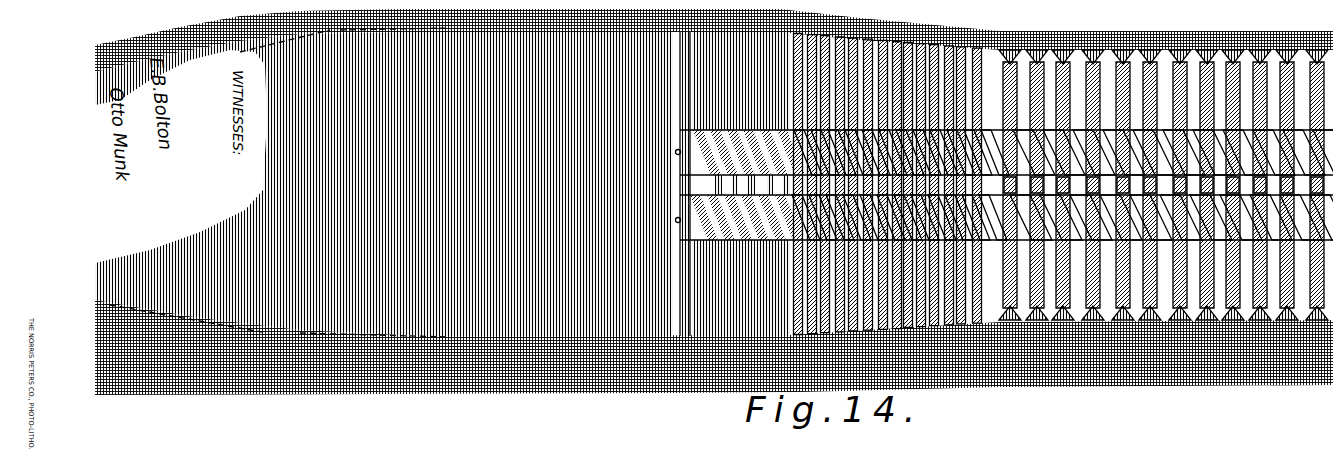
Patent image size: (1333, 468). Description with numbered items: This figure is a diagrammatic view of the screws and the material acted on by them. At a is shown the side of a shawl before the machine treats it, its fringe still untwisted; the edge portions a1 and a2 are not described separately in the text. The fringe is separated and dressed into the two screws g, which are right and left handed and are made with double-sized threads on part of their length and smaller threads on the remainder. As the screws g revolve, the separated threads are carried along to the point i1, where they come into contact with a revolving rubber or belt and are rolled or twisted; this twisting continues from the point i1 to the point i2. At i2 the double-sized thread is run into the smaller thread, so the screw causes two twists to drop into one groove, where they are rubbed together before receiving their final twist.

The side of a shawl a is at (714, 202).
The selvage edge portion a1 is at (258, 330).
The selvage edge portion a2 is at (386, 333).
The point i' i1 is at (798, 30).
The point i2 is at (962, 36).
The screws g is at (1253, 217).